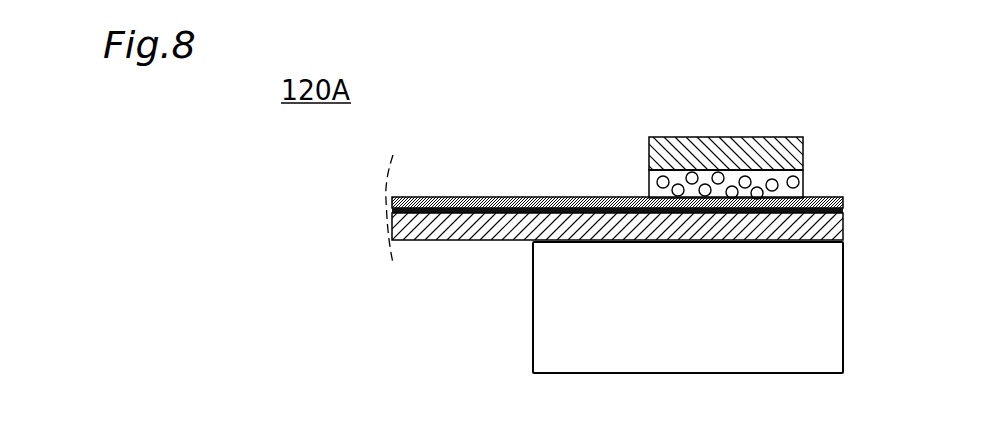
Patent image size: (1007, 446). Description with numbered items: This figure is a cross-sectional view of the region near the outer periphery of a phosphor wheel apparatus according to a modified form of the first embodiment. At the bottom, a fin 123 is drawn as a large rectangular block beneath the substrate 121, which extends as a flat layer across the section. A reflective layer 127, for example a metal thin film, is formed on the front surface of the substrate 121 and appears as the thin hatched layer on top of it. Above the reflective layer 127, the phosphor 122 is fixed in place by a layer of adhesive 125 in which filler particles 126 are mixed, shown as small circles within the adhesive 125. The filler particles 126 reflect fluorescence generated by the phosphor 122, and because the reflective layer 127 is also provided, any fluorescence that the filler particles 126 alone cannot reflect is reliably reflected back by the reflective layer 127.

The substrate 121 is at (478, 197).
The phosphor 122 is at (686, 138).
The fins 123 is at (682, 340).
The adhesive 125 is at (780, 138).
The filler particles 126 is at (648, 181).
The reflective layer 127 is at (845, 199).